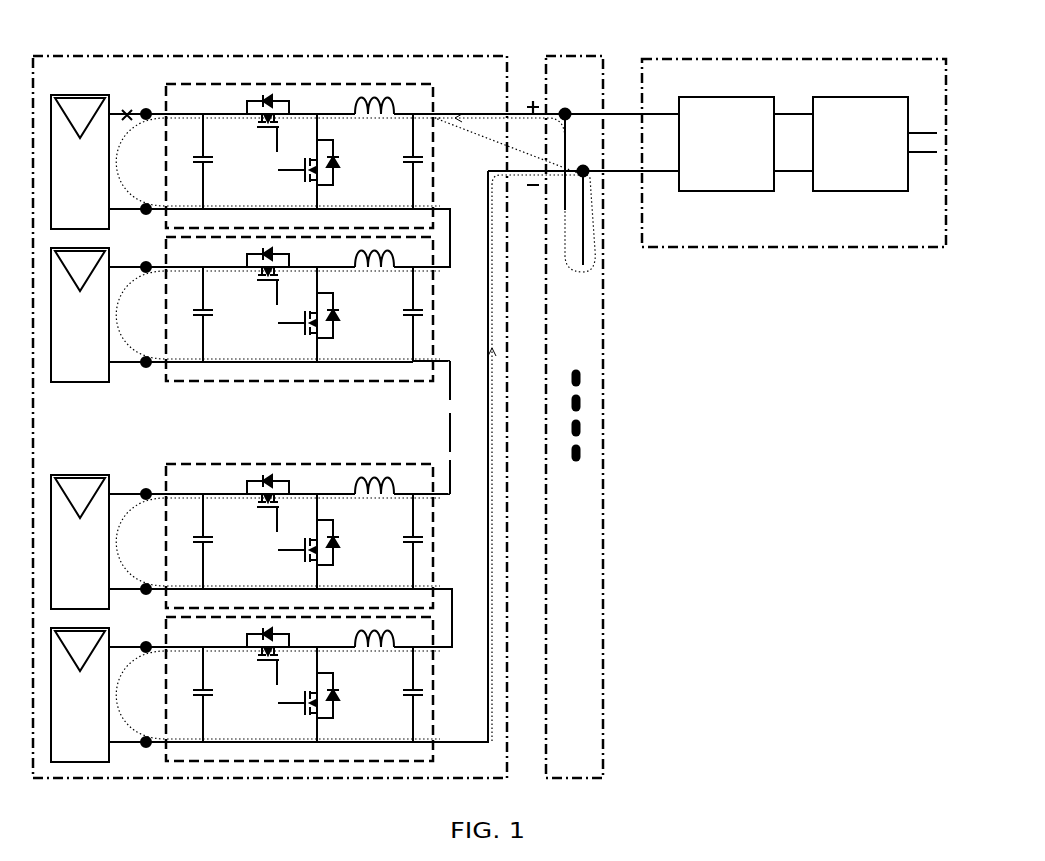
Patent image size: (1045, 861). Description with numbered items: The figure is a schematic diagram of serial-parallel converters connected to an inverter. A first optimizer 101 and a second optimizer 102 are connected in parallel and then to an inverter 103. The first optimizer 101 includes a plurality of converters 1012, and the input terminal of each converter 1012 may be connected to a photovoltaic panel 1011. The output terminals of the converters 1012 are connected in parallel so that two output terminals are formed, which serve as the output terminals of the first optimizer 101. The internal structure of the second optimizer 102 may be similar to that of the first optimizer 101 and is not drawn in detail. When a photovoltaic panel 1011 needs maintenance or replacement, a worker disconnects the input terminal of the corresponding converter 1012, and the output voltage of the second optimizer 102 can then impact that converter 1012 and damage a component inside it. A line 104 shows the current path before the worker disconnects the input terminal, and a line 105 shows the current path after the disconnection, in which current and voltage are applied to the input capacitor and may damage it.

The first optimizer 101 is at (338, 53).
The photovoltaic panel 1011 is at (80, 428).
The converter 1012 is at (433, 105).
The second optimizer 102 is at (563, 54).
The inverter 103 is at (795, 57).
The line 104 is at (595, 252).
The line 105 is at (197, 140).